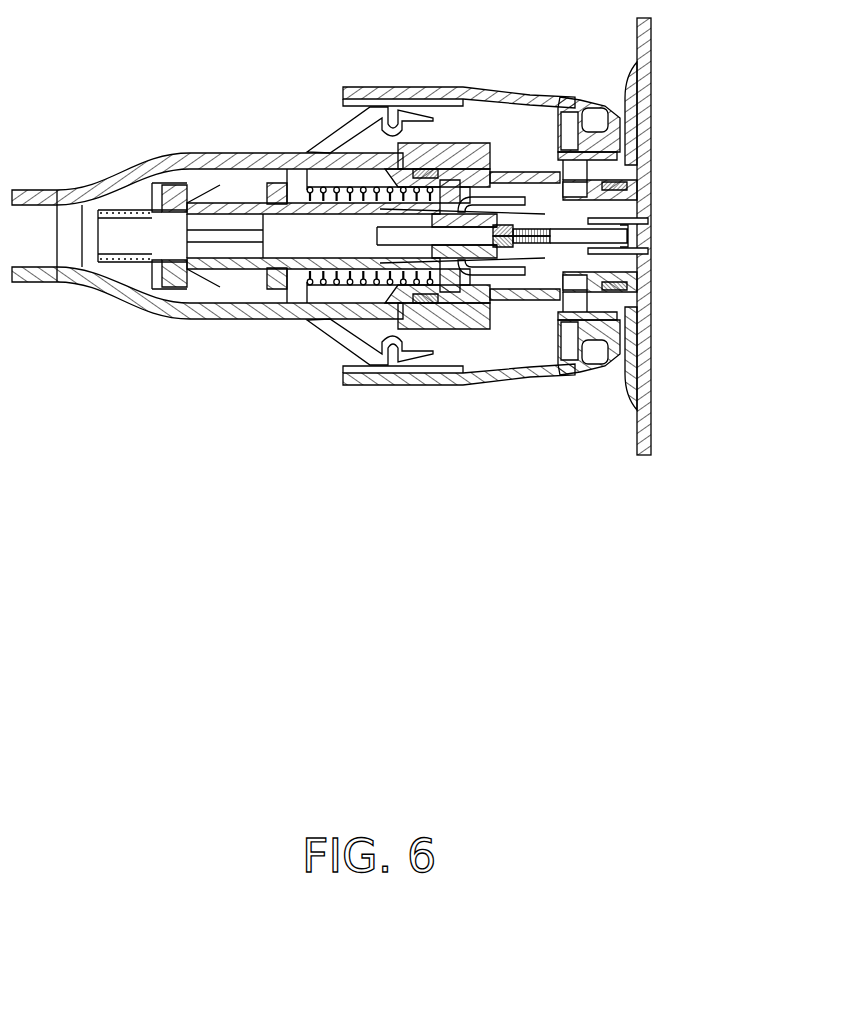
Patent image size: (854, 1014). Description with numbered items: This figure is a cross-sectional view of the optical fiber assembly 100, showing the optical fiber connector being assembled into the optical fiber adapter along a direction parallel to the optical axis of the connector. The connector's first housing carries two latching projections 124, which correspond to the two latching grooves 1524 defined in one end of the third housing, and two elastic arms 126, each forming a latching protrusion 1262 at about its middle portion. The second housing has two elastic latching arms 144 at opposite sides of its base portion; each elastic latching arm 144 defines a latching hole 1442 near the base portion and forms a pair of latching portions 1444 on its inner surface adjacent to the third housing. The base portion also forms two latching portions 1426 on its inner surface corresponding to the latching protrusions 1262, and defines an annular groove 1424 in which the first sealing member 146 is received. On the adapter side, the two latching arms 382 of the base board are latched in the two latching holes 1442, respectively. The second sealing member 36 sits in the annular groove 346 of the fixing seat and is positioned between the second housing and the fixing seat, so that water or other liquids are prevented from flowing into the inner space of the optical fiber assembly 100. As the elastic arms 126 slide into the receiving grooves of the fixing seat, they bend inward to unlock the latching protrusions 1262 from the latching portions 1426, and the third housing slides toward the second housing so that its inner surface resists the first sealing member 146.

The optical fiber assembly 100 is at (142, 52).
The latching projections 124 is at (213, 175).
The latching grooves 1524 is at (209, 183).
The latching portions 1444 is at (387, 107).
The latching protrusion 1262 is at (545, 205).
The latching portions 1426 is at (552, 130).
The latching arms 382 is at (595, 120).
The latching hole 1442 is at (597, 124).
The second sealing member 36 is at (612, 191).
The annular groove 346 is at (580, 228).
The elastic arms 126 is at (610, 234).
The first sealing member 146 is at (413, 298).
The annular groove 1424 is at (433, 304).
The elastic latching arms 144 is at (495, 376).